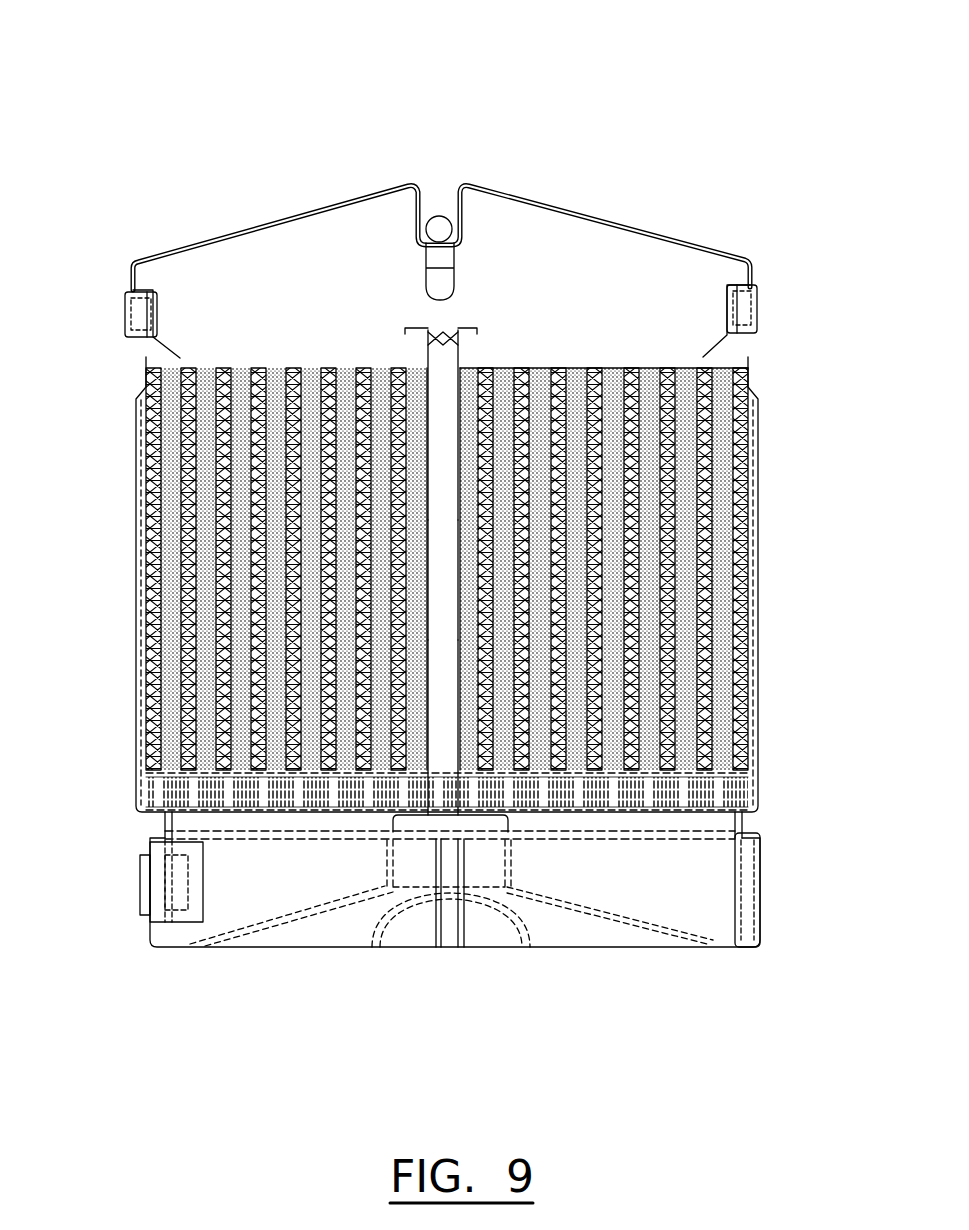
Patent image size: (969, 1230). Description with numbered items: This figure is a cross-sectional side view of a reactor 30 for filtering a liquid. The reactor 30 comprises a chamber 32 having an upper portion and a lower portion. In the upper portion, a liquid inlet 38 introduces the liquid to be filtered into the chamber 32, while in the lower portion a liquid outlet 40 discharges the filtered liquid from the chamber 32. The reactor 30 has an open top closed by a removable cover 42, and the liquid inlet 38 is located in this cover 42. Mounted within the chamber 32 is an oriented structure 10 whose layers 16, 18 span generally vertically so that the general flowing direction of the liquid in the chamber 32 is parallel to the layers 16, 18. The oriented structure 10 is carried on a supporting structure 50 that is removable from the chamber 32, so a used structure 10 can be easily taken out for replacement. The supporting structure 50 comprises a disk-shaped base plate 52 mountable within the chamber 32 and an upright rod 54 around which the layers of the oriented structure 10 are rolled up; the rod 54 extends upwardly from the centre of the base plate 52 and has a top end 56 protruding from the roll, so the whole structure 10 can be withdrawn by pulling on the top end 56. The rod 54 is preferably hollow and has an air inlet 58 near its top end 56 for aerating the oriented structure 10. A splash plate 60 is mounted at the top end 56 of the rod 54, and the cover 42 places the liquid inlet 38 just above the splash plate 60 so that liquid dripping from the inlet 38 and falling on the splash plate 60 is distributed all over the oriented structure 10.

The reactor 30 is at (404, 80).
The liquid inlet 38 is at (450, 214).
The removable cover 42 is at (684, 244).
The top end 56 is at (427, 343).
The air inlet 58 is at (427, 355).
The splash plate 60 is at (471, 330).
The layer 16 is at (256, 368).
The layer 18 is at (683, 368).
The chamber 32 is at (130, 495).
The supporting structure 50 is at (465, 503).
The oriented structure 10 is at (732, 627).
The upright rod 54 is at (445, 665).
The base plate 52 is at (230, 796).
The liquid outlet 40 is at (452, 828).